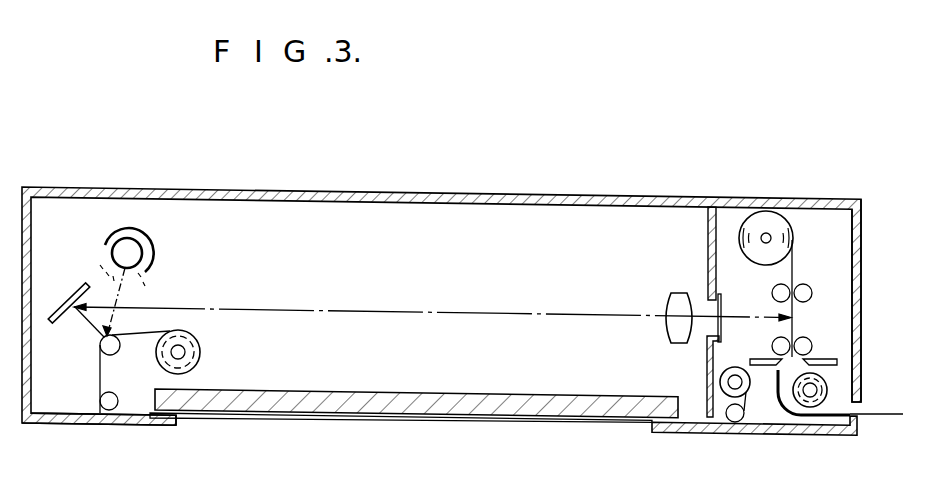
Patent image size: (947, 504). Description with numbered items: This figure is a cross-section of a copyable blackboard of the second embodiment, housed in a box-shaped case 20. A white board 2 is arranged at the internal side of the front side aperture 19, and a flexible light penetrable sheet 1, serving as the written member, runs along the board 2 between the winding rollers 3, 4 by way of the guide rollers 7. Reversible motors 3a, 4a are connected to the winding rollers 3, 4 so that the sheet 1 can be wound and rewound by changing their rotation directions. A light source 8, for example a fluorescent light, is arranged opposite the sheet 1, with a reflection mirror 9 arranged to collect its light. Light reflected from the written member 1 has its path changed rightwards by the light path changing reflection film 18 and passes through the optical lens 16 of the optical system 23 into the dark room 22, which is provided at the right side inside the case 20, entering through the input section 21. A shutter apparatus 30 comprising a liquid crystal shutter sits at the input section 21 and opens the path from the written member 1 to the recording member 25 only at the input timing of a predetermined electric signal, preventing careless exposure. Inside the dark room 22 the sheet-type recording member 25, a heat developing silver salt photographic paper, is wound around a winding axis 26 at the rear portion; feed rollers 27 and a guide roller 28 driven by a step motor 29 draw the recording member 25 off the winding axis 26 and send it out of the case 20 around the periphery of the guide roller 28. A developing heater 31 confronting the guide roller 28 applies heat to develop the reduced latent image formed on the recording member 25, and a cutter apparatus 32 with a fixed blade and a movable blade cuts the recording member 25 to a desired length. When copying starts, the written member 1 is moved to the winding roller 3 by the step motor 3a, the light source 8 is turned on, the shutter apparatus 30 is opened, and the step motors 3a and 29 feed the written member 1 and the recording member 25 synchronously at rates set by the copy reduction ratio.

The light penetrable sheet 1 is at (455, 420).
The board 2 is at (344, 404).
The winding roller 3 is at (180, 351).
The step motor 3a is at (201, 366).
The winding roller 4 is at (728, 381).
The reversible motor 4a is at (730, 366).
The guide roller 7 is at (100, 344).
The light source 8 is at (110, 253).
The reflection mirror 9 is at (145, 229).
The optical lens 16 is at (677, 302).
The light path changing reflection film 18 is at (71, 303).
The front side aperture 19 is at (178, 421).
The case 20 is at (474, 301).
The input section 21 is at (707, 303).
The dark room 22 is at (847, 222).
The optical system 23 is at (458, 313).
The recording member 25 is at (793, 268).
The winding axis 26 is at (767, 233).
The feed rollers 27 is at (803, 295).
The guide roller 28 is at (830, 380).
The step motor 29 is at (820, 398).
The shutter apparatus 30 is at (721, 299).
The developing heater 31 is at (807, 426).
The cutter apparatus 32 is at (828, 356).